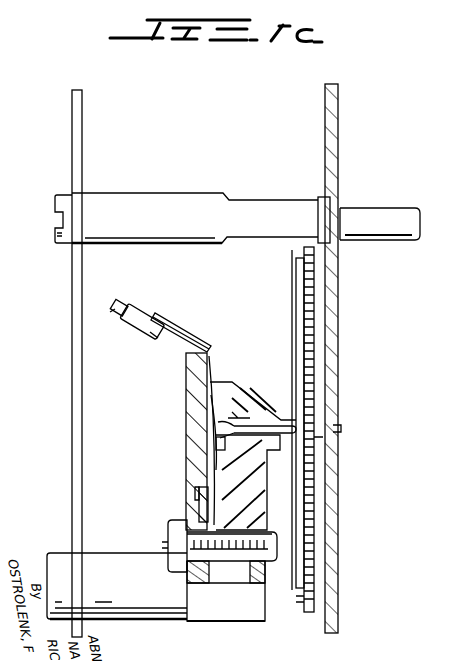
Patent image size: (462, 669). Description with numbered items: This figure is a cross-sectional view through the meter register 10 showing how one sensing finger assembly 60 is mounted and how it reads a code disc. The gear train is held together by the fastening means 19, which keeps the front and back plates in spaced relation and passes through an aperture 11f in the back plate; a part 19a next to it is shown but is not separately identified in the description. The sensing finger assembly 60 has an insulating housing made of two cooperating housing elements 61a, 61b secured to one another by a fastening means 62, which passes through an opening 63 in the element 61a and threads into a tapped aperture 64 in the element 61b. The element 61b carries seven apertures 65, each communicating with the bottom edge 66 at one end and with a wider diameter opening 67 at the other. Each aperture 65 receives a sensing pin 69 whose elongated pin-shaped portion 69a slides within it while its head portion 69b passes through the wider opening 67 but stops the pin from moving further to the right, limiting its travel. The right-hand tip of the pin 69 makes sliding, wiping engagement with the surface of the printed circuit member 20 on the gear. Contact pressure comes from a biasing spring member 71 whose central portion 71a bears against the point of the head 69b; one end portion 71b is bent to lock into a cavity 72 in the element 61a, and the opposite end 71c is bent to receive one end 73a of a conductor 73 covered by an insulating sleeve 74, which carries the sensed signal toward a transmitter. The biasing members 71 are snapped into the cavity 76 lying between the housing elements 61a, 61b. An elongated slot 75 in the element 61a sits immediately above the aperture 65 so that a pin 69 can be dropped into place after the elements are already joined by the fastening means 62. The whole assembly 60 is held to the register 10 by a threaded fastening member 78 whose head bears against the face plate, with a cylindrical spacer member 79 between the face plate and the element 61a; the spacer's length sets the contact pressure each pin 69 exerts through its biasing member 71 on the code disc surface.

The register 10 is at (343, 454).
The aperture 11f is at (336, 212).
The fastening means 19 is at (165, 193).
The support bar 19a is at (317, 291).
The printed circuit member 20 is at (288, 305).
The sensing finger assembly 60 is at (139, 453).
The housing element 61a is at (197, 478).
The housing element 61b is at (258, 522).
The fastening means 62 is at (159, 544).
The opening 63 is at (186, 578).
The tapped aperture 64 is at (265, 600).
The aperture 65 is at (253, 400).
The bottom edge 66 is at (273, 400).
The wider diameter opening 67 is at (267, 370).
The sensing pin 69 is at (283, 438).
The elongated pin-shaped portion 69a is at (297, 430).
The head portion 69b is at (205, 418).
The biasing spring member 71 is at (213, 410).
The central portion 71a is at (206, 455).
The end portion 71b is at (258, 500).
The opposite end 71c is at (185, 365).
The cavity 72 is at (199, 505).
The conductor 73 is at (160, 297).
The end of conductor 73a is at (153, 338).
The insulating sleeve 74 is at (140, 328).
The elongated slot 75 is at (196, 428).
The cavity 76 is at (255, 347).
The fastening member 78 is at (44, 573).
The spacer member 79 is at (130, 624).